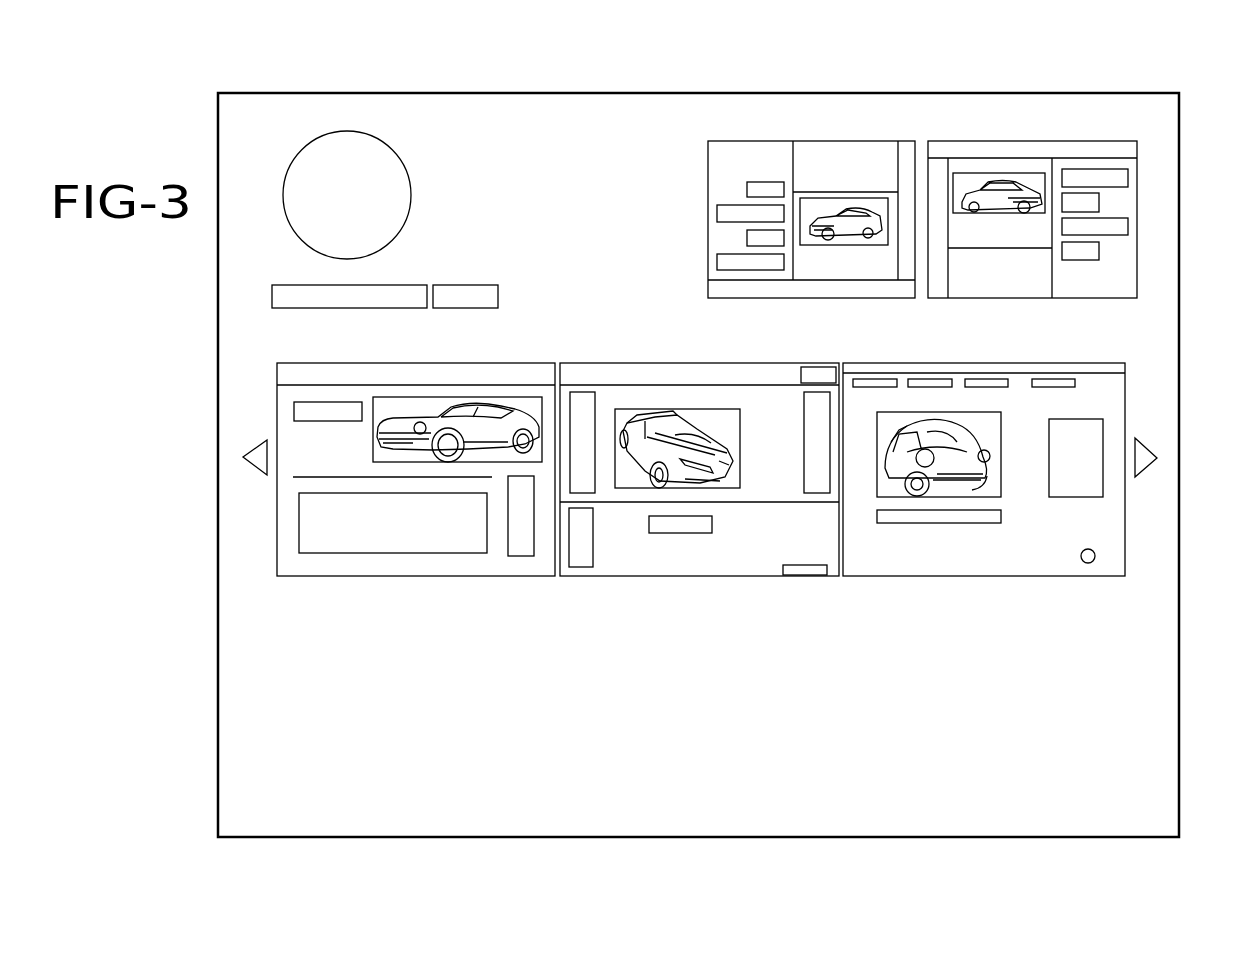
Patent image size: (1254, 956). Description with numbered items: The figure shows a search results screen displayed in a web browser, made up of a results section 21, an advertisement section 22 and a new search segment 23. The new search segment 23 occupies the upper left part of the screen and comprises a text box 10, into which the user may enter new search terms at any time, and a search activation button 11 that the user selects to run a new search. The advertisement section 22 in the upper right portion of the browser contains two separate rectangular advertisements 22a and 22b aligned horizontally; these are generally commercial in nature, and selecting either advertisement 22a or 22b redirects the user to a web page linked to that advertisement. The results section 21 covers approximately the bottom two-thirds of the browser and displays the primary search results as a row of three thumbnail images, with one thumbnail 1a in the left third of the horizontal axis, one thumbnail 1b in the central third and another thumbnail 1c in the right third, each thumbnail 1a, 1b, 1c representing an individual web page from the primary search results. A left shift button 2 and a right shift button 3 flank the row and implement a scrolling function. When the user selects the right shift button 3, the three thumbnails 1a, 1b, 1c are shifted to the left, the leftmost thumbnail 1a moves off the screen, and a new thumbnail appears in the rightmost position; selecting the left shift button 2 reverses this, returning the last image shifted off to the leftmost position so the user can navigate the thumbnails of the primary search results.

The thumbnail 1a is at (519, 577).
The thumbnail 1b is at (788, 577).
The thumbnail 1c is at (1069, 577).
The left shift button 2 is at (258, 446).
The right shift button 3 is at (1137, 440).
The text box 10 is at (272, 309).
The search activation button 11 is at (465, 287).
The results section 21 is at (197, 827).
The advertisement section 22 is at (1158, 89).
The advertisement 22a is at (708, 206).
The advertisement 22b is at (1137, 192).
The new search segment 23 is at (247, 89).